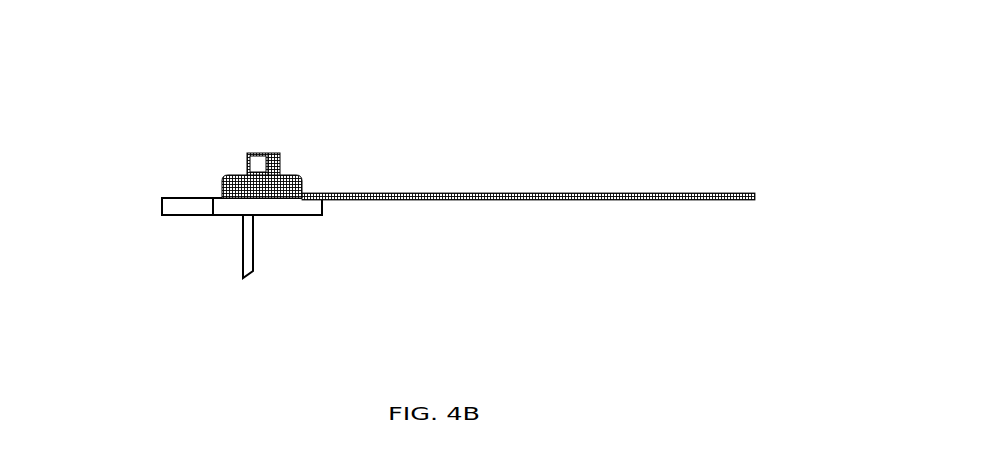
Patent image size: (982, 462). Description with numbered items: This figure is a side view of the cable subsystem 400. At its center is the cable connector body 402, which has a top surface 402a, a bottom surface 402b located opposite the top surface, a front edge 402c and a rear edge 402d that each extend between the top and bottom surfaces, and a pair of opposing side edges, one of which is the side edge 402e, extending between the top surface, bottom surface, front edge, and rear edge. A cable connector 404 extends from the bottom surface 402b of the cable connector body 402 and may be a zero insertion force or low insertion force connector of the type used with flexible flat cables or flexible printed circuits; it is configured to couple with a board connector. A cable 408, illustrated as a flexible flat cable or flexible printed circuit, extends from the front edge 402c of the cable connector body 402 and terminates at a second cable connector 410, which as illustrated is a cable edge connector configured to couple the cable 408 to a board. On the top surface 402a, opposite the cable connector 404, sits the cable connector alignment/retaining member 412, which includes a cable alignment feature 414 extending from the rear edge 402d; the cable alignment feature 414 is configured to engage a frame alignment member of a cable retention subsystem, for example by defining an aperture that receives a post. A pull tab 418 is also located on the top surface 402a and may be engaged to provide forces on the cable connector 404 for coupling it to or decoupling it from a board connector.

The cable subsystem 400 is at (156, 99).
The cable connector body 402 is at (224, 177).
The top surface 402a is at (228, 198).
The bottom surface 402b is at (292, 172).
The front edge 402c is at (302, 190).
The rear edge 402d is at (223, 190).
The side edge 402e is at (273, 192).
The cable connector 404 is at (260, 153).
The cable 408 is at (438, 197).
The second cable connector 410 is at (745, 195).
The cable connector alignment/retaining member 412 is at (260, 216).
The cable alignment feature 414 is at (162, 200).
The pull tab 418 is at (249, 282).